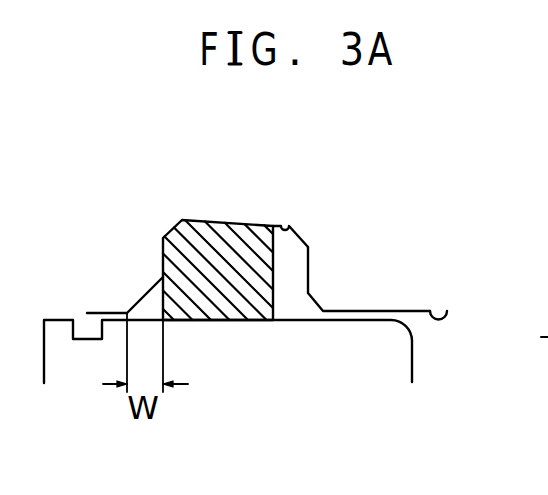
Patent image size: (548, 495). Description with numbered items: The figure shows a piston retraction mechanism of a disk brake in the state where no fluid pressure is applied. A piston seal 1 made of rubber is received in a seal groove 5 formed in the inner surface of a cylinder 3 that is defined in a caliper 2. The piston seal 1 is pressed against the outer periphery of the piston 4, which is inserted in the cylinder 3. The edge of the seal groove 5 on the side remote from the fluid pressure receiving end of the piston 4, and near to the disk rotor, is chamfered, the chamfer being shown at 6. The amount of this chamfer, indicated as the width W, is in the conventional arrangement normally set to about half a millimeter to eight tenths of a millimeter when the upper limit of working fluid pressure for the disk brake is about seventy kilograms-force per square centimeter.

The piston seal 1 is at (192, 230).
The caliper 2 is at (342, 292).
The cylinder 3 is at (447, 311).
The piston 4 is at (328, 352).
The seal groove 5 is at (292, 233).
The chamfer 6 is at (145, 303).